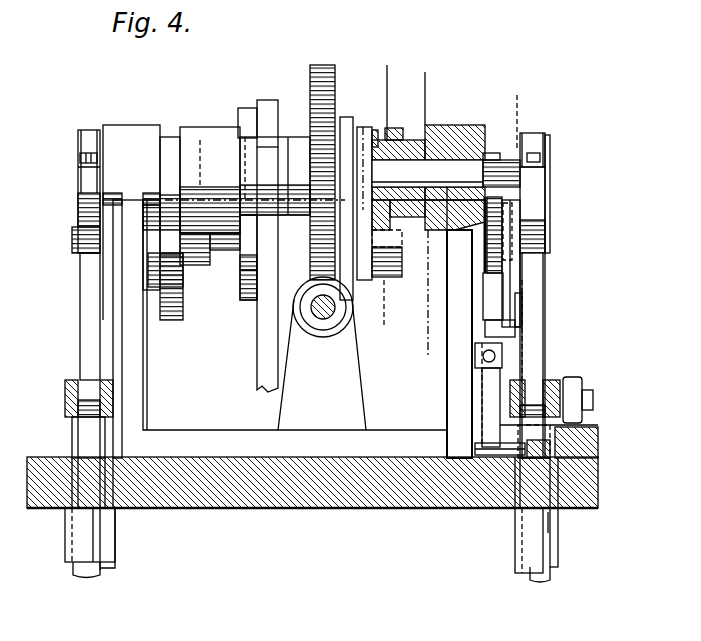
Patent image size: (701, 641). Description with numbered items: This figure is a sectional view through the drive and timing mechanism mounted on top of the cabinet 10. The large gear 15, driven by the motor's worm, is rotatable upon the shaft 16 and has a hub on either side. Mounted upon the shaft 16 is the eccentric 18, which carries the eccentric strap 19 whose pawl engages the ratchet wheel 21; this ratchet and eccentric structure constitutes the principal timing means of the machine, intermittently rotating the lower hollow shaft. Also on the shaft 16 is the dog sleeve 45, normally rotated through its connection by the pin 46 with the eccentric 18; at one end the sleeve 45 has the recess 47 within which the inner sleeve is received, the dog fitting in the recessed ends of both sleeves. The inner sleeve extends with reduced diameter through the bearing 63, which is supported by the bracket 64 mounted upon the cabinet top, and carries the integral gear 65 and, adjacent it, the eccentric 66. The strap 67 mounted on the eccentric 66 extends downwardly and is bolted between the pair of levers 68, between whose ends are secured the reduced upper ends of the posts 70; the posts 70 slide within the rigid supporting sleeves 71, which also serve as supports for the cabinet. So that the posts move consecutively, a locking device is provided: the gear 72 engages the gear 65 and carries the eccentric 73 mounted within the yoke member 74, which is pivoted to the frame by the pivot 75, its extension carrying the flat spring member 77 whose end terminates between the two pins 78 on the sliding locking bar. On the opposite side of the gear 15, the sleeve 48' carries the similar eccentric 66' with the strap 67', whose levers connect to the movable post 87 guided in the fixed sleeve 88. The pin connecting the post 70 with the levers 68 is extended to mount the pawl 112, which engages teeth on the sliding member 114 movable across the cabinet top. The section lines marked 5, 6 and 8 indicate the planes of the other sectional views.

The cabinet 10 is at (202, 490).
The gear 15 is at (322, 67).
The shaft 16 is at (435, 167).
The eccentric 18 is at (358, 130).
The eccentric strap 19 is at (347, 117).
The ratchet wheel 21 is at (348, 280).
The sleeve 45 is at (382, 213).
The pin 46 is at (372, 137).
The recess 47 is at (394, 128).
The sleeve 48' is at (207, 179).
The bearing 63 is at (470, 155).
The bracket 64 is at (453, 392).
The gear 65 is at (495, 163).
The eccentric 66 is at (550, 185).
The eccentric 66' is at (68, 191).
The strap 67 is at (554, 312).
The strap 67' is at (75, 355).
The levers 68 is at (557, 380).
The posts 70 is at (547, 577).
The supporting sleeves 71 is at (513, 565).
The gear 72 is at (503, 213).
The eccentric 73 is at (510, 248).
The yoke member 74 is at (520, 235).
The pivot 75 is at (518, 312).
The flat spring member 77 is at (487, 380).
The pins 78 is at (475, 448).
The movable post 87 is at (93, 573).
The fixed sleeve 88 is at (65, 545).
The pawl 112 is at (580, 385).
The sliding member 114 is at (590, 443).
The section line 5- 5 is at (507, 95).
The section line 6- 6 is at (425, 72).
The section line 8- 8 is at (387, 65).